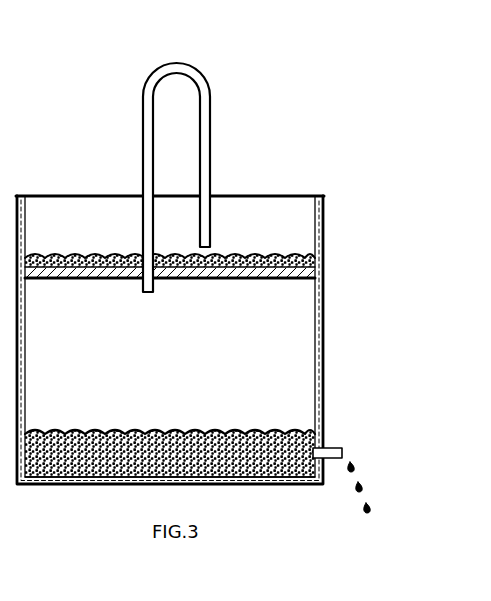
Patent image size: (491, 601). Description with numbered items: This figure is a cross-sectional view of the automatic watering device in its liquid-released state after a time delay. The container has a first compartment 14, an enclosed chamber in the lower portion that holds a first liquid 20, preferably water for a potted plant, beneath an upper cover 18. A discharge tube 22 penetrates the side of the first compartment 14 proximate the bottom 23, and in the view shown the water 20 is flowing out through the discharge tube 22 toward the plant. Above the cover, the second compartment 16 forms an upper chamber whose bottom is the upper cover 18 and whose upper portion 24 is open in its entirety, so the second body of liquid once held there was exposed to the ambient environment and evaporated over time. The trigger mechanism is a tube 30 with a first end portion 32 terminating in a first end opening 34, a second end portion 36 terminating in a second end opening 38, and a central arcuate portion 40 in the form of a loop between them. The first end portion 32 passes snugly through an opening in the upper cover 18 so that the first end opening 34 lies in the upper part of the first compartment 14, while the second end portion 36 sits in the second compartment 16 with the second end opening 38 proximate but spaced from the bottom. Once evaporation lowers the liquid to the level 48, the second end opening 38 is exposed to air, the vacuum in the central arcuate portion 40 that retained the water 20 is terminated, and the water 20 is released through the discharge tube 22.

The first compartment 14 is at (291, 351).
The second compartment 16 is at (297, 225).
The upper cover 18 is at (283, 282).
The first liquid 20 is at (91, 466).
The discharge tube 22 is at (330, 447).
The bottom 23 is at (232, 485).
The upper portion 24 is at (117, 195).
The tube 30 is at (161, 174).
The first end portion 32 is at (142, 285).
The first end opening 34 is at (153, 292).
The second end portion 36 is at (212, 183).
The second end opening 38 is at (211, 248).
The central arcuate portion 40 is at (175, 64).
The lowered liquid level 48 is at (65, 256).